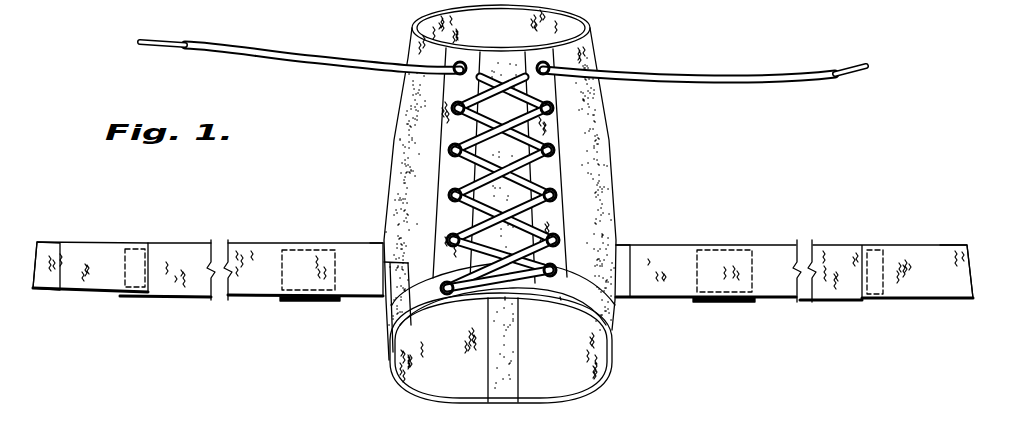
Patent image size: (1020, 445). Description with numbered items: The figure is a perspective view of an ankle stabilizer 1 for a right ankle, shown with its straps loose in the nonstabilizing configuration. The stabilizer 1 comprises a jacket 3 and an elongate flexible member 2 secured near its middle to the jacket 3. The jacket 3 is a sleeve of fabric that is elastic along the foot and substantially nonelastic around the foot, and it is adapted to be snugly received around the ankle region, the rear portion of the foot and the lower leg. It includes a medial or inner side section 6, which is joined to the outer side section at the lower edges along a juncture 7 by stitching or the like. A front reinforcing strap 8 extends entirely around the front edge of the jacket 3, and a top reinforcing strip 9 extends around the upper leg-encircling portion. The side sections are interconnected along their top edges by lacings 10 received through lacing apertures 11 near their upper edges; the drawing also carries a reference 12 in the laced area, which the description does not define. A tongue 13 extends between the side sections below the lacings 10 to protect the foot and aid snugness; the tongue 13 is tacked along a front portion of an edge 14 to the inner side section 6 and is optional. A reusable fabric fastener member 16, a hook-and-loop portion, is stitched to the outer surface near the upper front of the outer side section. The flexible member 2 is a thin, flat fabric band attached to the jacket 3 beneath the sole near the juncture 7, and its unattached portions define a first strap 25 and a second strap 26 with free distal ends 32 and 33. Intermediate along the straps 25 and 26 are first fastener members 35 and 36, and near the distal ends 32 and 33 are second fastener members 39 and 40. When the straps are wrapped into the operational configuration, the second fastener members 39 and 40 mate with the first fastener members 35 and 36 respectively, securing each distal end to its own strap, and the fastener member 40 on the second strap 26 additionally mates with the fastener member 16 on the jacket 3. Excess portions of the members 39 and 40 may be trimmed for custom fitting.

The ankle stabilizer 1 is at (345, 159).
The elongate flexible member 2 is at (183, 244).
The jacket 3 is at (593, 163).
The inner side section 6 is at (610, 207).
The juncture 7 is at (510, 398).
The front reinforcing strap 8 is at (610, 332).
The top reinforcing strip 9 is at (591, 38).
The lacings 10 is at (459, 115).
The lacing apertures 11 is at (453, 165).
The lace 12 is at (550, 220).
The tongue 13 is at (505, 298).
The edge of tongue 14 is at (560, 298).
The fabric fastener member 16 is at (388, 325).
The first strap 25 is at (640, 288).
The second strap 26 is at (376, 284).
The distal end of first strap 32 is at (965, 246).
The distal end of second strap 33 is at (45, 243).
The first fastener member 35 is at (715, 303).
The first fastener member 36 is at (297, 301).
The second fastener member 39 is at (917, 290).
The second fastener member 40 is at (95, 278).